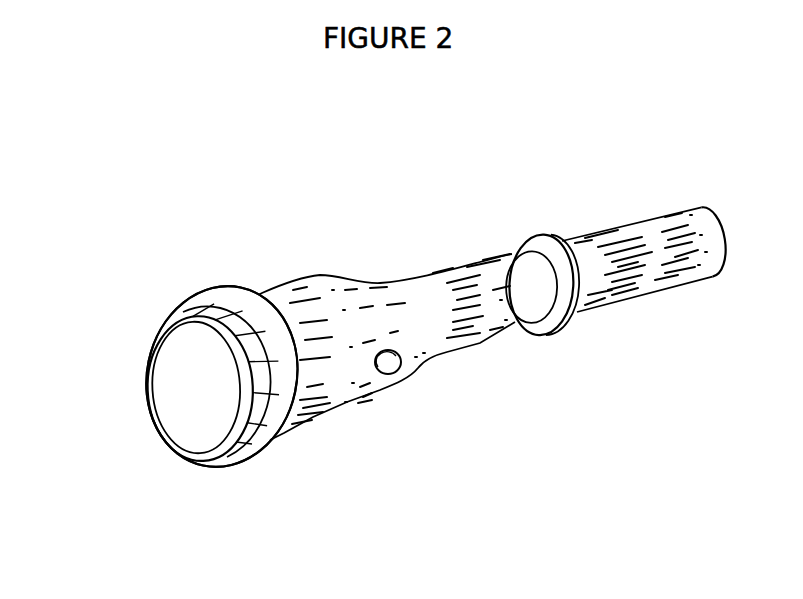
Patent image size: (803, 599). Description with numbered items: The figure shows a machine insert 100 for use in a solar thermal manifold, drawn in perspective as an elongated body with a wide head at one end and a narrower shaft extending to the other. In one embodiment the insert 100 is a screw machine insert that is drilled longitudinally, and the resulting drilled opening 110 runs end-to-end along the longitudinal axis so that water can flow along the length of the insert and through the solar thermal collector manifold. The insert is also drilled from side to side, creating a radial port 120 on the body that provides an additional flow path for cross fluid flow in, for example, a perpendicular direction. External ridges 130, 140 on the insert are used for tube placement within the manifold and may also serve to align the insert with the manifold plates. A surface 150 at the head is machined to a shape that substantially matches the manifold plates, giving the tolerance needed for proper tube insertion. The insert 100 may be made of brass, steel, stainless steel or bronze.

The machine insert 100 is at (325, 230).
The drilled opening 110 is at (193, 363).
The port 120 is at (402, 368).
The external ridge 130 is at (238, 462).
The external ridge 140 is at (566, 323).
The surface 150 is at (270, 295).